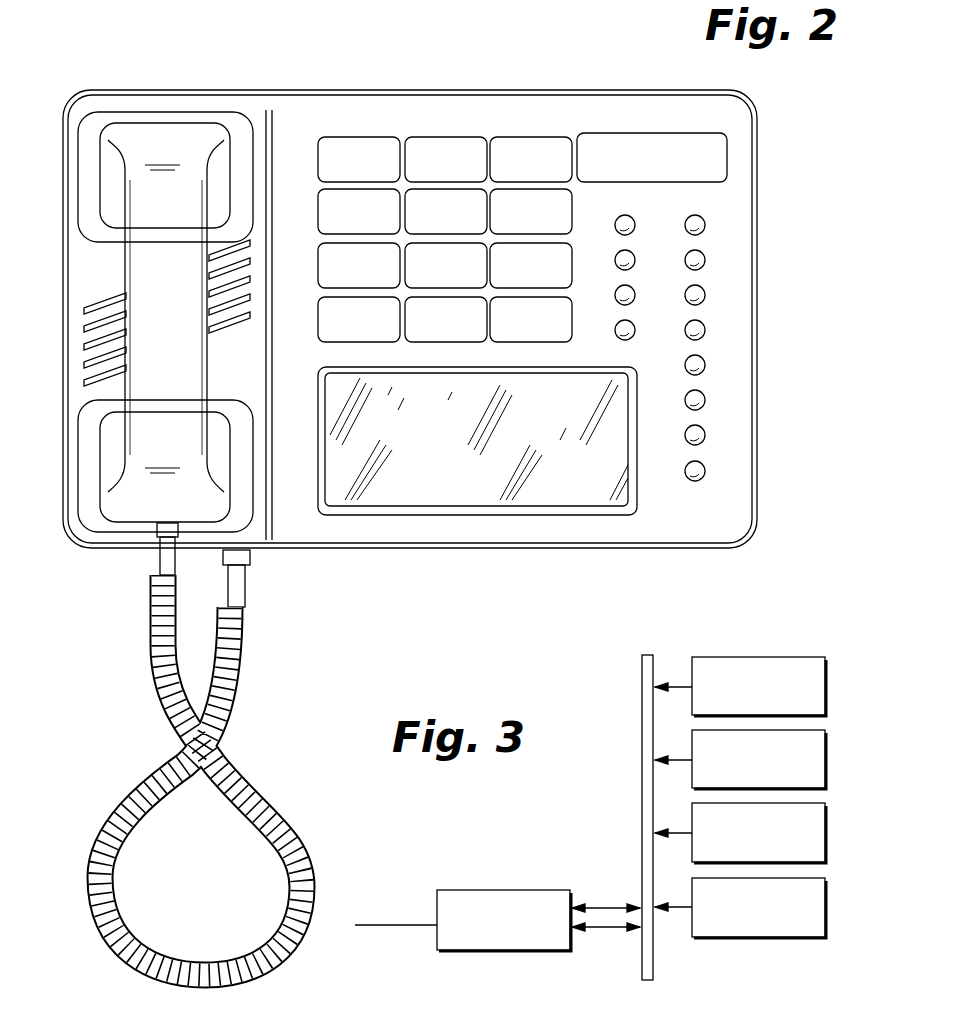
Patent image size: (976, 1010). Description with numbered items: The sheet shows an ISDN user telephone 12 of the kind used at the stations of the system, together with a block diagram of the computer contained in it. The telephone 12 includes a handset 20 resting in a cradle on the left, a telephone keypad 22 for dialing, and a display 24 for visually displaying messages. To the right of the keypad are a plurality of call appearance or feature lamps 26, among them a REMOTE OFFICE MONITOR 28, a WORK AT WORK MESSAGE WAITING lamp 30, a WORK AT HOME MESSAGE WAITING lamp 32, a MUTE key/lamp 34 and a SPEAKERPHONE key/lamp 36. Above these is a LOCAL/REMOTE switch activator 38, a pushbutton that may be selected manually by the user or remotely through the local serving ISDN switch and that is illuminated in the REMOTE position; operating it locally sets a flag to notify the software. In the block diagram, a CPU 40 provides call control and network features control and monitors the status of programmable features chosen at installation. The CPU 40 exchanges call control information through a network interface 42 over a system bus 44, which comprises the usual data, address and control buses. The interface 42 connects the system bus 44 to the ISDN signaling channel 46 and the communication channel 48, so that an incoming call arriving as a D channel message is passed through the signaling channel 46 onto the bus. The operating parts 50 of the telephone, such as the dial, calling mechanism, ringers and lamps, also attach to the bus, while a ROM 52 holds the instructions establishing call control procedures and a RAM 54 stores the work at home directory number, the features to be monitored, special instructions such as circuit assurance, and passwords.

In FIG. 2, the ISDN telephone 12 is at (400, 548).
In FIG. 2, the handset 20 is at (183, 125).
In FIG. 2, the telephone keypad 22 is at (453, 133).
In FIG. 2, the display 24 is at (520, 515).
In FIG. 2, the call appearance or feature lamps 26 is at (642, 217).
In FIG. 2, the REMOTE OFFICE MONITOR 28 is at (706, 330).
In FIG. 2, the WORK AT WORK MESSAGE WAITING lamp 30 is at (706, 365).
In FIG. 2, the WORK AT HOME MESSAGE WAITING lamp 32 is at (706, 400).
In FIG. 2, the MUTE key/lamp 34 is at (706, 435).
In FIG. 2, the SPEAKERPHONE key/lamp 36 is at (706, 471).
In FIG. 2, the LOCAL/REMOTE switch activator 38 is at (727, 152).
In FIG. 3, the CPU 40 is at (827, 759).
In FIG. 3, the network interface 42 is at (512, 890).
In FIG. 3, the system bus 44 is at (653, 962).
In FIG. 3, the ISDN signaling channel 46 is at (607, 932).
In FIG. 3, the communication channel 48 is at (607, 932).
In FIG. 3, the operating parts 50 is at (827, 686).
In FIG. 3, the ROM 52 is at (827, 832).
In FIG. 3, the RAM 54 is at (827, 906).